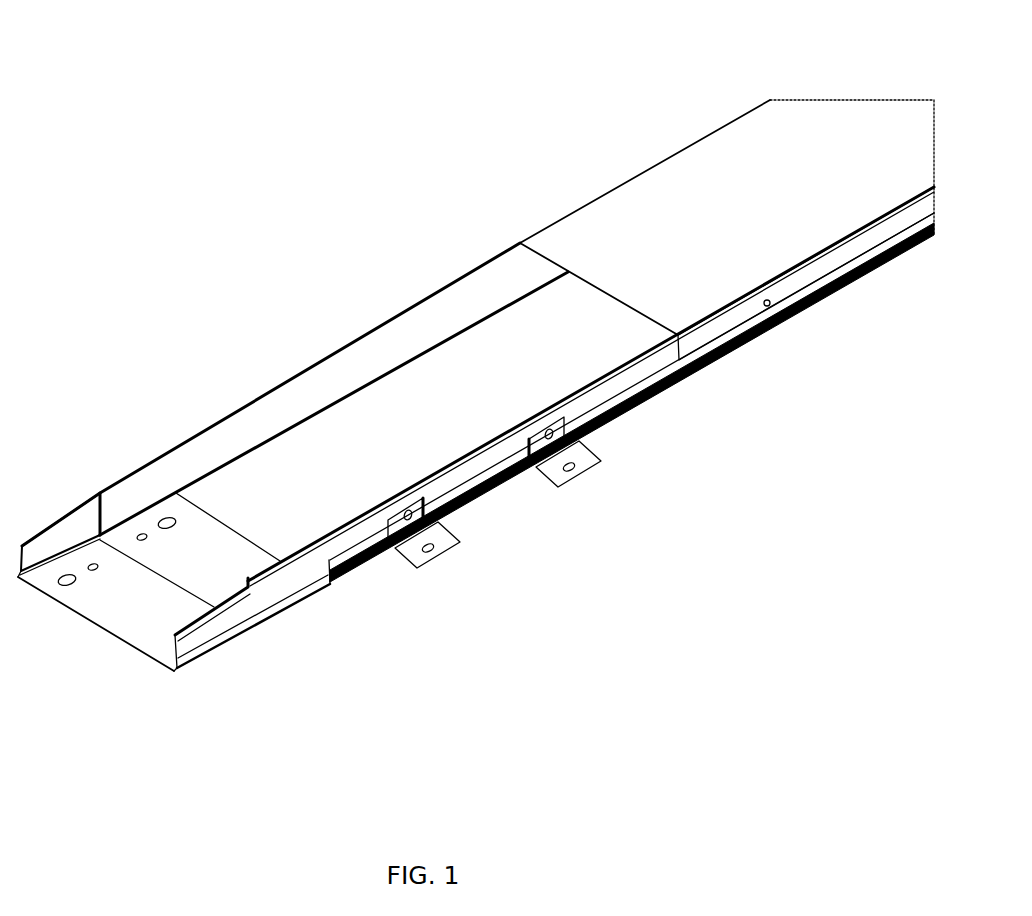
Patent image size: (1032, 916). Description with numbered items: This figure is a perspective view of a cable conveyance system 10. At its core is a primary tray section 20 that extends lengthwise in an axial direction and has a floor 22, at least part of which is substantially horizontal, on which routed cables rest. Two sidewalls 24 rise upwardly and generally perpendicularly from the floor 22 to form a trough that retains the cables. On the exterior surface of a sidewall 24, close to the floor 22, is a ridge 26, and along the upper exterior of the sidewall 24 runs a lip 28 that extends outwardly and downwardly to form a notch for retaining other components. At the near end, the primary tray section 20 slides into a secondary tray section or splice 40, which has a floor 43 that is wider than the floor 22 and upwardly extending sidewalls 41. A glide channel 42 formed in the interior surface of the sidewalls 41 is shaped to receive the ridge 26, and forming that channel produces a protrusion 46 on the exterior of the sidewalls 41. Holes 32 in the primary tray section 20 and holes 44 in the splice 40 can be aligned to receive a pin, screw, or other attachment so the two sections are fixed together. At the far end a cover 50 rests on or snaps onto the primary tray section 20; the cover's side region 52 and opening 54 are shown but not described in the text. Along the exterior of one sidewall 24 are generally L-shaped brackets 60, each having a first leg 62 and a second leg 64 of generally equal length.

The cable conveyance system 10 is at (275, 113).
The primary tray section 20 is at (385, 334).
The floor 22 is at (436, 423).
The sidewalls 24 is at (331, 385).
The ridge 26 is at (353, 570).
The lip 28 is at (663, 380).
The holes 32 is at (165, 518).
The splice 40 is at (124, 645).
The sidewalls 41 is at (89, 502).
The glide channel 42 is at (46, 587).
The floor 43 is at (136, 615).
The holes 44 is at (66, 570).
The protrusion 46 is at (261, 617).
The cover 50 is at (646, 245).
The cover side wall 52 is at (717, 333).
The hole 54 is at (773, 308).
The L-shaped brackets 60 is at (458, 540).
The first leg 62 is at (431, 558).
The second leg 64 is at (401, 517).